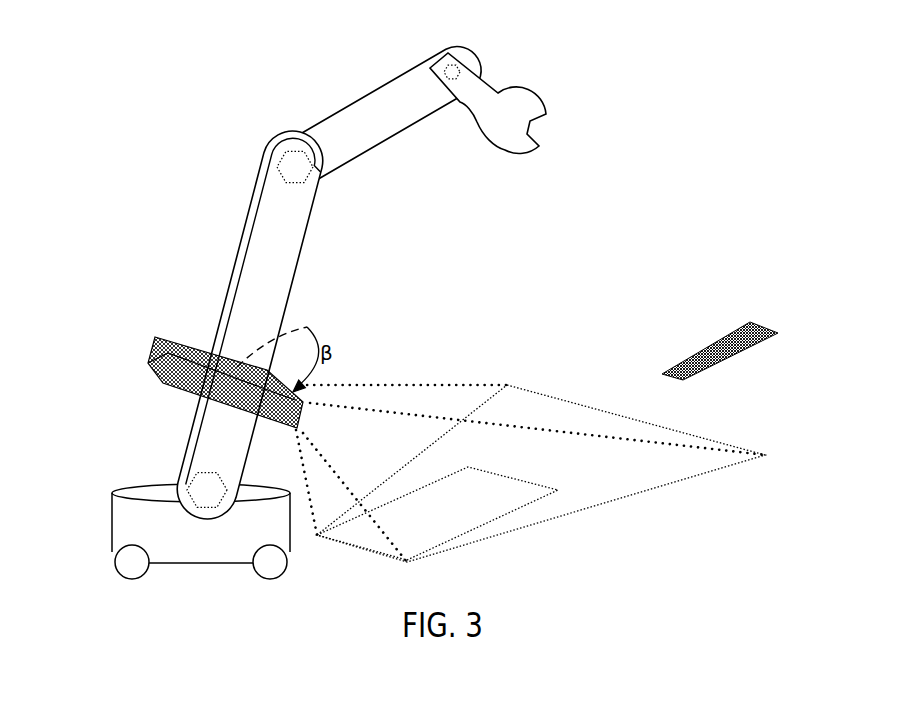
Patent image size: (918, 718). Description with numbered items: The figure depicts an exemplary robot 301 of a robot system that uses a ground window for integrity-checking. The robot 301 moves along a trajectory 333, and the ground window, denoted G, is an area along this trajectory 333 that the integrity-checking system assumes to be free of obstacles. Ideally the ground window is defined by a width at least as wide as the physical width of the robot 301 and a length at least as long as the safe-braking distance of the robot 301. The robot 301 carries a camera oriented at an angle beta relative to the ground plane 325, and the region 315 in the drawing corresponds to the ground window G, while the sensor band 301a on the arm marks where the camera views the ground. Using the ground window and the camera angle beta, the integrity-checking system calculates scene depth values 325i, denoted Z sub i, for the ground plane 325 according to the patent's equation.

The robot 301 is at (142, 145).
The sensor 301a is at (176, 345).
The scene depth values 325i is at (340, 385).
The ground plane 325 is at (668, 484).
The ground region G 315 is at (520, 510).
The trajectory 333 is at (727, 357).